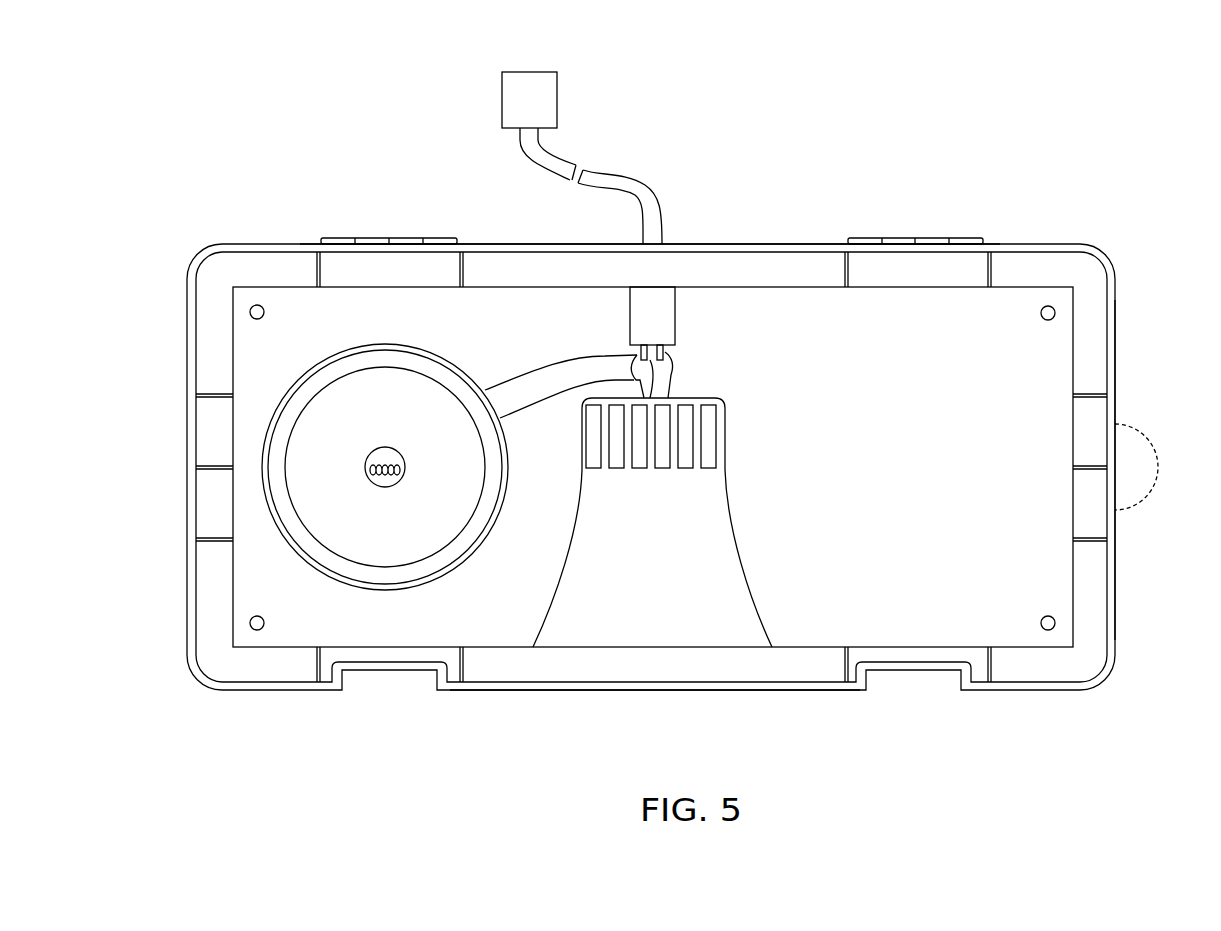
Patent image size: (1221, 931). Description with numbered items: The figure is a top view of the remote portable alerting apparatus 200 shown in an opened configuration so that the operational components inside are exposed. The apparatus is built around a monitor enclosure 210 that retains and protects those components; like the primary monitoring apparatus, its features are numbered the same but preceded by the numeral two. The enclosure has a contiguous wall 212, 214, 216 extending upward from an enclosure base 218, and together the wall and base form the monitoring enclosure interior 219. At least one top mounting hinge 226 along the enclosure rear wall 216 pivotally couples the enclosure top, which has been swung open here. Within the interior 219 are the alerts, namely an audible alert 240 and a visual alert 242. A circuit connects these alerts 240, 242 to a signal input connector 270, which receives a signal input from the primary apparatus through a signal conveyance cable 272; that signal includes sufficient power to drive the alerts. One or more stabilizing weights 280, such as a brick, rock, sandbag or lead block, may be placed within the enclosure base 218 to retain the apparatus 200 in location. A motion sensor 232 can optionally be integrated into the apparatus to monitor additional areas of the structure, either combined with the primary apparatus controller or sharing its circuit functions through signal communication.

The remote portable alerting apparatus 200 is at (236, 118).
The monitor enclosure 210 is at (206, 692).
The contiguous wall 212 is at (652, 690).
The contiguous wall 214 is at (1115, 600).
The enclosure rear wall 216 is at (568, 244).
The enclosure base 218 is at (932, 482).
The monitoring enclosure interior 219 is at (988, 314).
The top mounting hinge 226 is at (373, 238).
The motion sensor 232 is at (1145, 433).
The audible alert 240 is at (730, 522).
The visual alert 242 is at (437, 356).
The signal input connector 270 is at (675, 314).
The signal conveyance cable 272 is at (557, 100).
The stabilizing weights 280 is at (932, 392).